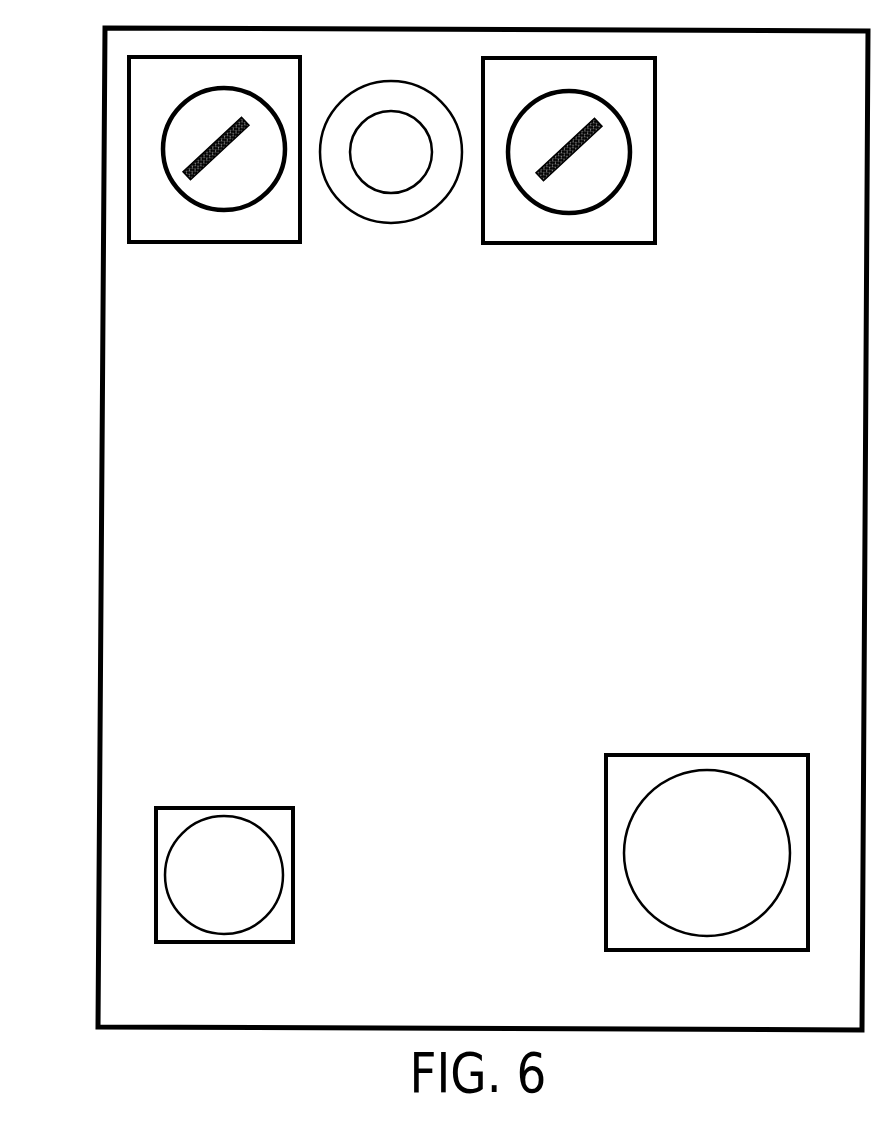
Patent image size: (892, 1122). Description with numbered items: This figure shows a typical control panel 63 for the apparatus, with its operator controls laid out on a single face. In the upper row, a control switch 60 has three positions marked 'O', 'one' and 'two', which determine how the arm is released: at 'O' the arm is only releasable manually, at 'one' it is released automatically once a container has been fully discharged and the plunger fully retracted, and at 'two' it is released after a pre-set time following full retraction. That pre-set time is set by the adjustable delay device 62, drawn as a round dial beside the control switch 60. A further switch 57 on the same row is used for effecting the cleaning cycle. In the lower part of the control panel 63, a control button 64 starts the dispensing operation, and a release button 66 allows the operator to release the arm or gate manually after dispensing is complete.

The switch 57 is at (567, 258).
The control switch 60 is at (221, 254).
The adjustable delay device 62 is at (397, 230).
The control panel 63 is at (90, 622).
The control button 64 is at (707, 727).
The release button 66 is at (223, 787).